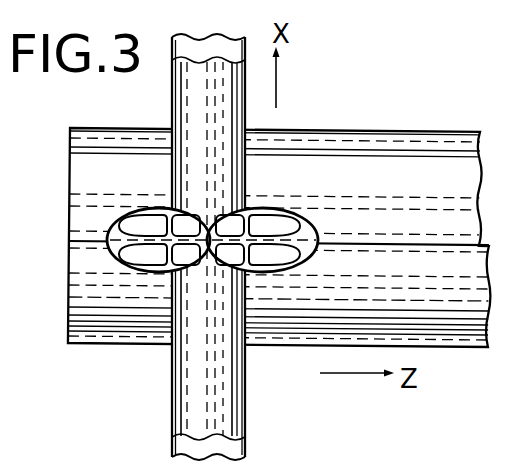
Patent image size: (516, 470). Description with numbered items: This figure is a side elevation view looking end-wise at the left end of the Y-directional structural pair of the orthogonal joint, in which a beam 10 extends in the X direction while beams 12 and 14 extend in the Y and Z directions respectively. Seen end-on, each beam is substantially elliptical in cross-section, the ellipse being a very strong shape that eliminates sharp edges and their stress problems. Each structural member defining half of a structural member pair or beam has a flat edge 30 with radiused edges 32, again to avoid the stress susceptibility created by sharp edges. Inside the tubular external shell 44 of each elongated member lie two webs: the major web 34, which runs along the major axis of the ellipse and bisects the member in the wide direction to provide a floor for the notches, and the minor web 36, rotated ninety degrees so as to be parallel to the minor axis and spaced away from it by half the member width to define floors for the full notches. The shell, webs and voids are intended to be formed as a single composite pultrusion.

The beam 10 is at (170, 402).
The beam 12 is at (277, 201).
The beam 14 is at (420, 132).
The flat edge 30 is at (198, 222).
The radiused edges 32 is at (210, 273).
The major web 34 is at (158, 254).
The minor web 36 is at (142, 267).
The tubular external shell 44 is at (161, 270).